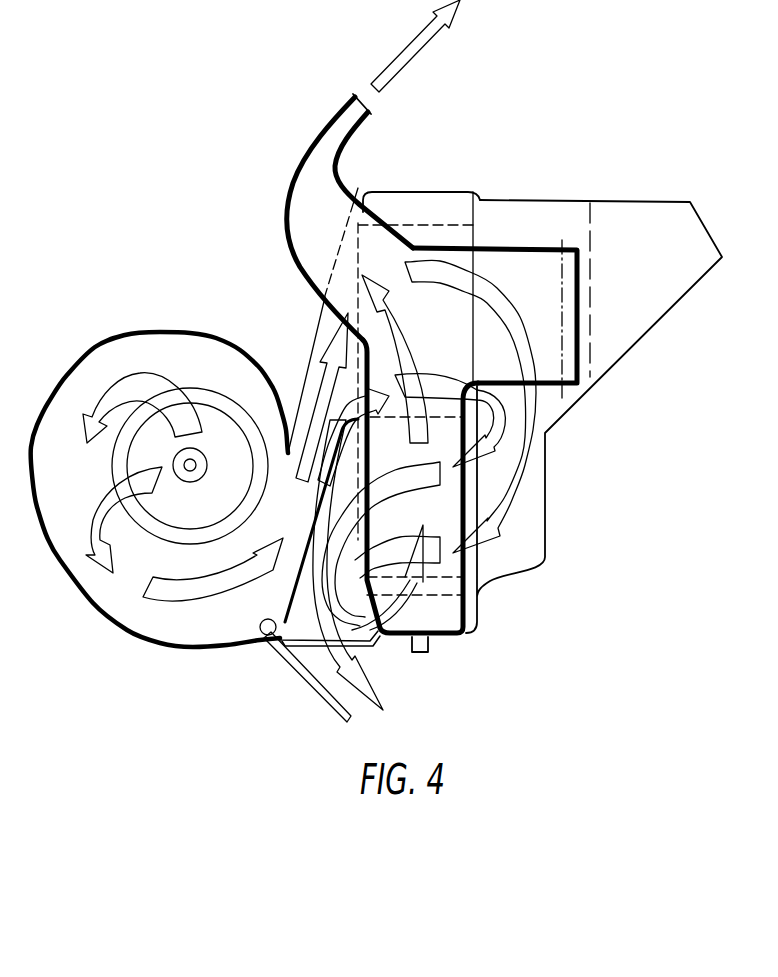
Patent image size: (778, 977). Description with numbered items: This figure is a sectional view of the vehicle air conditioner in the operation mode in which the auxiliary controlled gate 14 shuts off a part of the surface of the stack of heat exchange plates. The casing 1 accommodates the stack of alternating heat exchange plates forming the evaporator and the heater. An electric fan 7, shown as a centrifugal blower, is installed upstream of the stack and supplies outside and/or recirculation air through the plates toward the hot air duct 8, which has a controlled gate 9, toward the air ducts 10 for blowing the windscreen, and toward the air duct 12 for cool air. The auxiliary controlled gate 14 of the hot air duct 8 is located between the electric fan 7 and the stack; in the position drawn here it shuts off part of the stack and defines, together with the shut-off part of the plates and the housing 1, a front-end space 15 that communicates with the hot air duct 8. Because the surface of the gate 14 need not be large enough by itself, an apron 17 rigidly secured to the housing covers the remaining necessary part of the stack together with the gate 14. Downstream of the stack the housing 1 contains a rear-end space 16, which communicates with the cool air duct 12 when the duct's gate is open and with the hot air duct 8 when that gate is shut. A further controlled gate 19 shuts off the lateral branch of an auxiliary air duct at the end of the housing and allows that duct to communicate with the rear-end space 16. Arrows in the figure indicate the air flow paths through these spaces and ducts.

The casing 1 is at (428, 190).
The electric fan 7 is at (92, 354).
The hot air duct 8 is at (300, 665).
The controlled gate 9 is at (323, 703).
The air ducts for blowing the windscreen 10 is at (343, 203).
The air duct for cool air 12 is at (638, 225).
The auxiliary controlled gate 14 is at (283, 603).
The front-end space 15 is at (332, 490).
The rear-end space 16 is at (510, 447).
The apron 17 is at (332, 473).
The controlled gate 19 is at (540, 263).